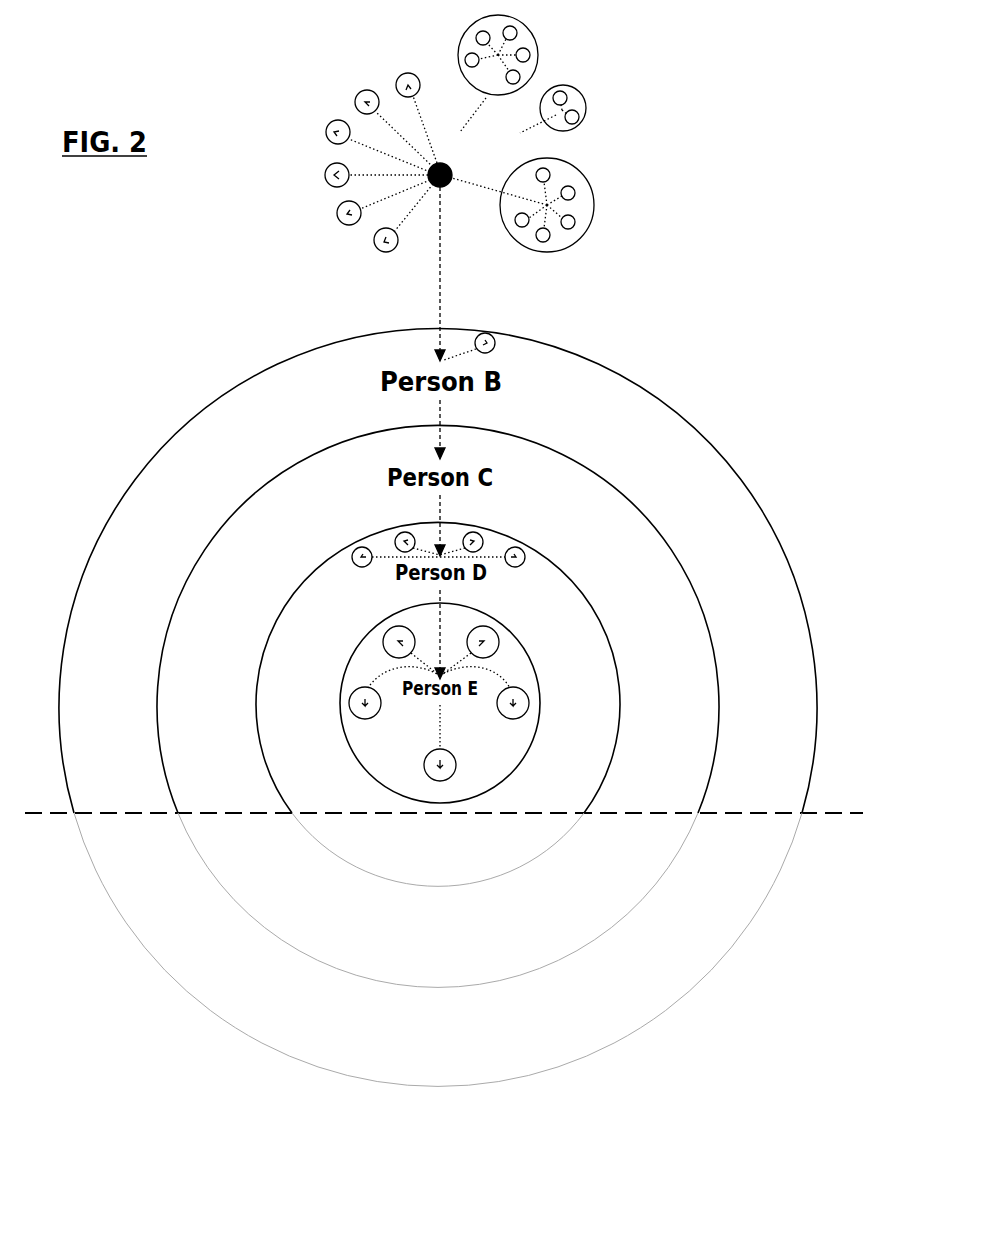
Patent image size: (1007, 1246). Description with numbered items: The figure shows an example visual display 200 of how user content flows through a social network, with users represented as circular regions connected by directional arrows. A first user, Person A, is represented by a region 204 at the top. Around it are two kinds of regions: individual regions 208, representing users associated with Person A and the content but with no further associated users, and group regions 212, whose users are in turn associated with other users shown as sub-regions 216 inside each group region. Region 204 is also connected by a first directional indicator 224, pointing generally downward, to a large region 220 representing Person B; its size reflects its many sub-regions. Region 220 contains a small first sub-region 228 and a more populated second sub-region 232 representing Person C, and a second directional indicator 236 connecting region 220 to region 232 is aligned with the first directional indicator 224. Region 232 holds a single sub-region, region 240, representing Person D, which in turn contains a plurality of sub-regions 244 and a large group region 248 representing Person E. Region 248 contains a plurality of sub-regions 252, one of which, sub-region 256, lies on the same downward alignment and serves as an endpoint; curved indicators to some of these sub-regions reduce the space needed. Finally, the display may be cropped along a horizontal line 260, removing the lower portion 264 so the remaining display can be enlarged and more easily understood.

The visual display 200 is at (150, 44).
The region 204 is at (459, 194).
The individual regions 208 is at (330, 124).
The group regions 212 is at (548, 199).
The sub-regions 216 is at (575, 224).
The region 220 is at (612, 370).
The first directional indicator 224 is at (437, 297).
The first sub-region 228 is at (495, 345).
The second sub-region 232 is at (582, 466).
The second directional indicator 236 is at (437, 430).
The region 240 is at (563, 575).
The sub-regions 244 is at (362, 568).
The region 248 is at (526, 648).
The sub-regions 252 is at (352, 693).
The sub-region 256 is at (455, 760).
The line 260 is at (822, 816).
The portion 264 is at (150, 1012).